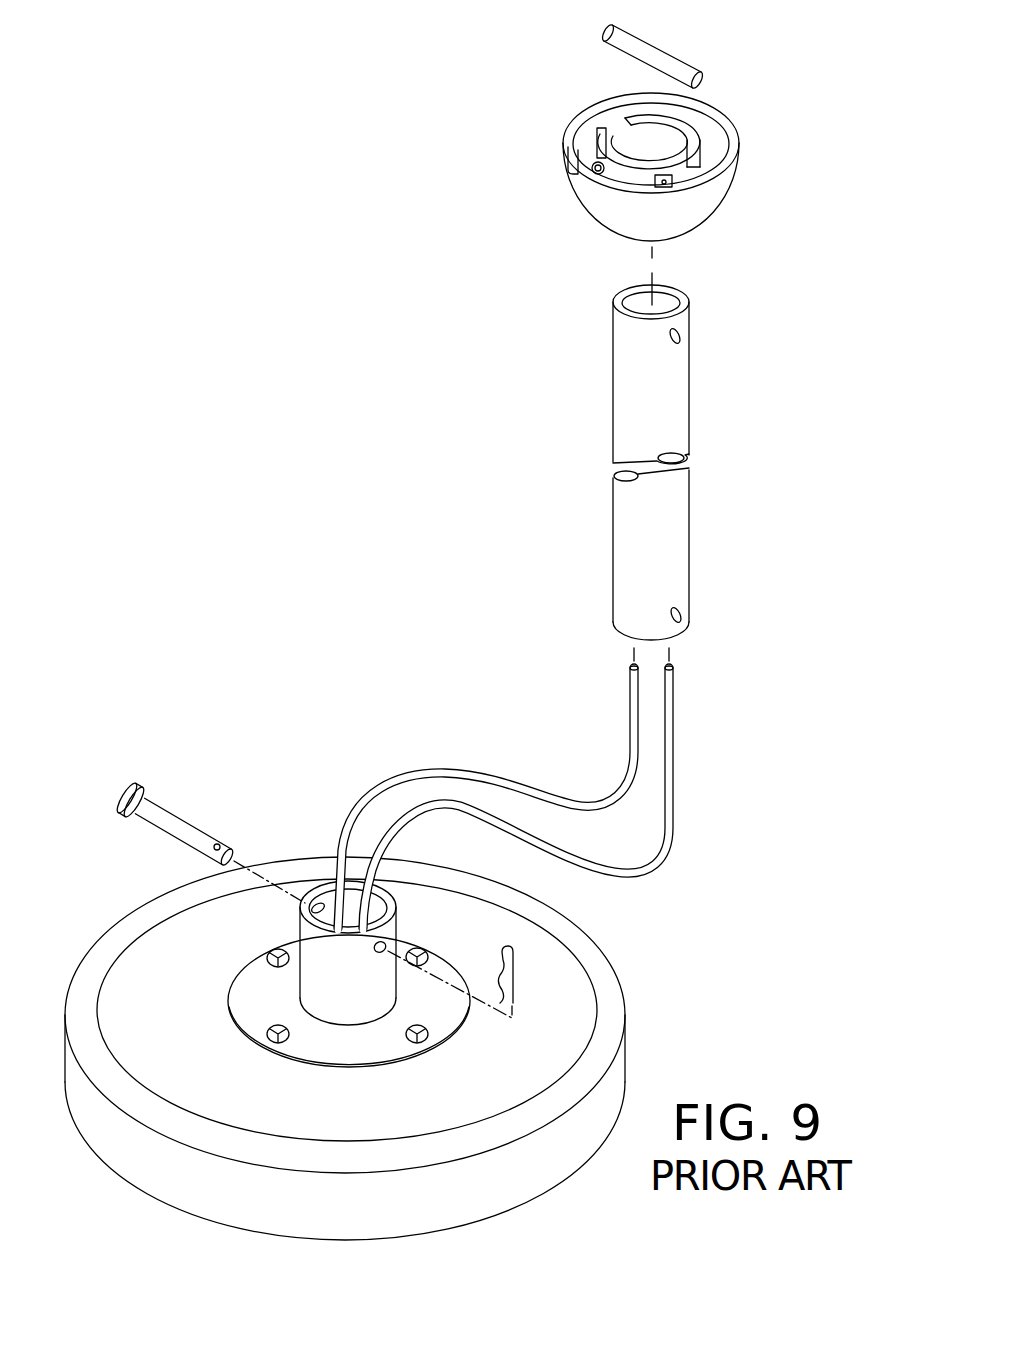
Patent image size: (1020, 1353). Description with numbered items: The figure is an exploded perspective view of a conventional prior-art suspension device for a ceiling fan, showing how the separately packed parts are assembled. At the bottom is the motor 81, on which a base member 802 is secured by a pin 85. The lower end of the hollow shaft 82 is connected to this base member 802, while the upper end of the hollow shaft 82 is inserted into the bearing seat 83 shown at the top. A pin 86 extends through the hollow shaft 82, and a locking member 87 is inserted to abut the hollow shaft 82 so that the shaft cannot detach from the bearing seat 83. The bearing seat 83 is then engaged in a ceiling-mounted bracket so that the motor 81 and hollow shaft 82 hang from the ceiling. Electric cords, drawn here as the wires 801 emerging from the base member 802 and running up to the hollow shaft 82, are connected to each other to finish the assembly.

The motor 81 is at (612, 1012).
The base member 802 is at (251, 990).
The wires 801 is at (672, 845).
The pin 85 is at (192, 832).
The hollow shaft 82 is at (677, 550).
The bearing seat 83 is at (717, 193).
The locking member 87 is at (595, 168).
The pin 86 is at (683, 72).